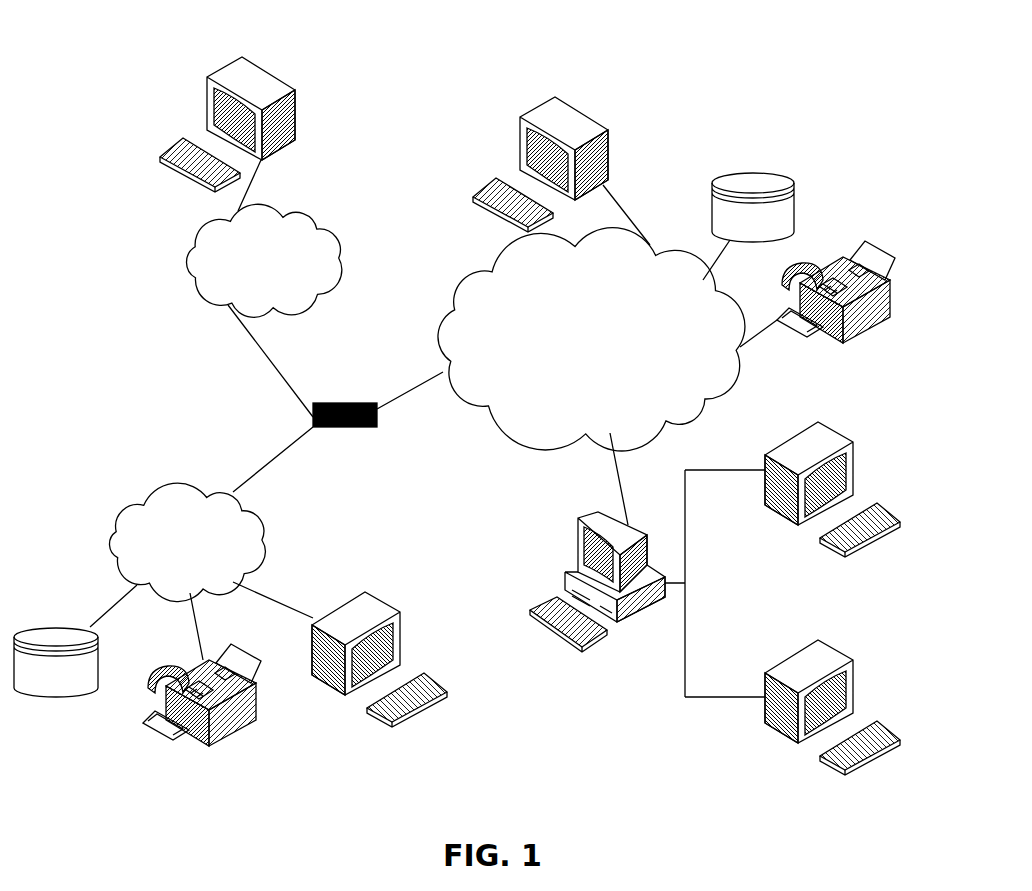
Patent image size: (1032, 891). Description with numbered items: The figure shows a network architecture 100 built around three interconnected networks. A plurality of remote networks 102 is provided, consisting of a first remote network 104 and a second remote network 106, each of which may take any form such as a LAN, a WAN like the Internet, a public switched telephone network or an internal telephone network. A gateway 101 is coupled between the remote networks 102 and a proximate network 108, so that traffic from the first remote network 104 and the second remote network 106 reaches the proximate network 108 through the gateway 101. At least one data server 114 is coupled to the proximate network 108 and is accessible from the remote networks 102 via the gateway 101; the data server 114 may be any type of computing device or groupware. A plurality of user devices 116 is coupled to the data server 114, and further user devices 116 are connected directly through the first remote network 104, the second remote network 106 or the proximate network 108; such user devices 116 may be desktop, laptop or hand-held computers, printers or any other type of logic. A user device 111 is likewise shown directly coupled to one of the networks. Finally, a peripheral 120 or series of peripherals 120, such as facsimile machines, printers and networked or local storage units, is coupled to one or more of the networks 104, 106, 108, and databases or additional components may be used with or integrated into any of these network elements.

The architecture 100 is at (147, 44).
The gateway 101 is at (333, 403).
The remote networks 102 is at (170, 318).
The first remote network 104 is at (114, 514).
The second remote network 106 is at (337, 232).
The proximate network 108 is at (697, 408).
The user device 111 is at (607, 133).
The data server 114 is at (577, 535).
The user devices 116 is at (296, 92).
The peripheral 120 is at (795, 183).